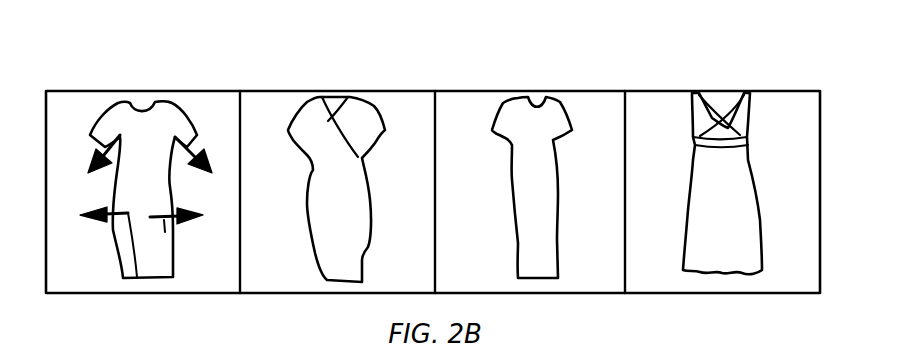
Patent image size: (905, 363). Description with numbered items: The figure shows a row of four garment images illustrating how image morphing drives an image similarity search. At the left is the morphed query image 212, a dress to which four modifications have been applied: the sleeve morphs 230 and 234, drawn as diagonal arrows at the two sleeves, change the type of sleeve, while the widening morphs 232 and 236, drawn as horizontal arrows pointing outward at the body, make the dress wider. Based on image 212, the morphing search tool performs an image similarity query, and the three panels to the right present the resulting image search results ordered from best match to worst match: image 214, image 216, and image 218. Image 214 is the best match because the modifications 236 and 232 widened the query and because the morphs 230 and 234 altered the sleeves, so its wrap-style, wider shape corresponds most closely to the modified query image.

The image 212 is at (143, 91).
The image search result 214 is at (338, 91).
The image search result 216 is at (532, 91).
The image search result 218 is at (722, 91).
The modification 230 is at (190, 147).
The modification 232 is at (168, 278).
The modification 234 is at (115, 140).
The modification 236 is at (123, 280).